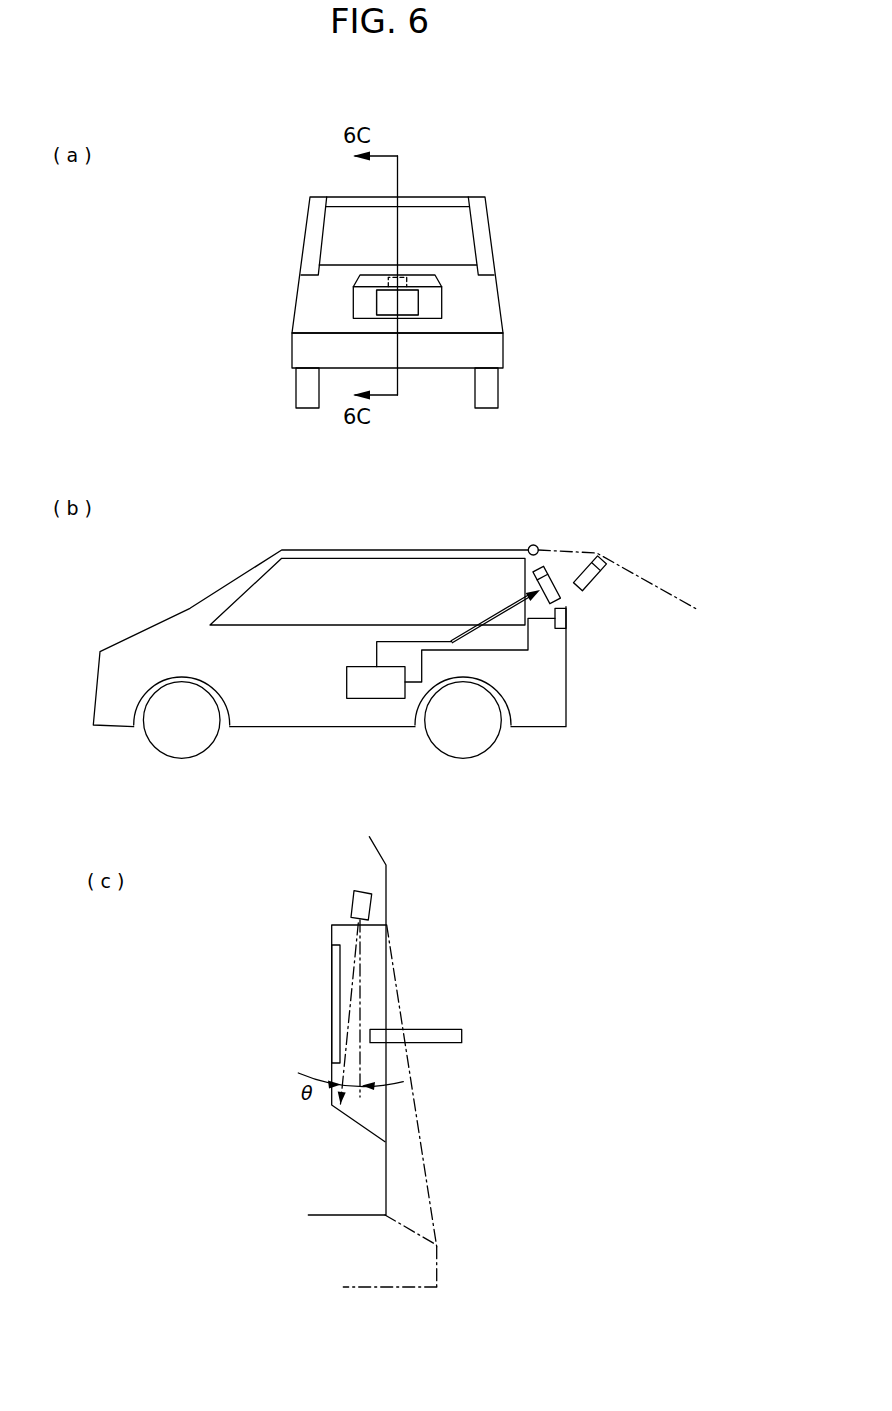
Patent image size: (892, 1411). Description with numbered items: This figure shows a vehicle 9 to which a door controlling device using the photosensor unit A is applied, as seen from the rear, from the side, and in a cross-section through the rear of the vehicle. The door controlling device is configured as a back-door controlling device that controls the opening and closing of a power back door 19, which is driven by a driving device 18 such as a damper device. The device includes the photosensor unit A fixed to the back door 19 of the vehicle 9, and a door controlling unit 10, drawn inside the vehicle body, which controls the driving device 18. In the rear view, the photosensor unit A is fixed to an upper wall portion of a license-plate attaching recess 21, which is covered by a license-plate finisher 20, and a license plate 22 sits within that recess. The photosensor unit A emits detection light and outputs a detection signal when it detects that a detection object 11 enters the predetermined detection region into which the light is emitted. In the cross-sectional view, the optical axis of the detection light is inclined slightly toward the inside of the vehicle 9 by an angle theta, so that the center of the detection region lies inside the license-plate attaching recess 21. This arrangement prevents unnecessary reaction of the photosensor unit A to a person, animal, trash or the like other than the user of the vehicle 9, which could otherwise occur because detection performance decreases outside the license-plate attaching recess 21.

The vehicle 9 is at (517, 305).
The door controlling unit 10 is at (373, 690).
The detection object 11 is at (457, 1037).
The driving device 18 is at (543, 571).
The back door 19 is at (488, 284).
The license-plate finisher 20 is at (423, 279).
The license-plate attaching recess 21 is at (365, 303).
The license plate 22 is at (410, 303).
The photosensor unit A is at (560, 617).